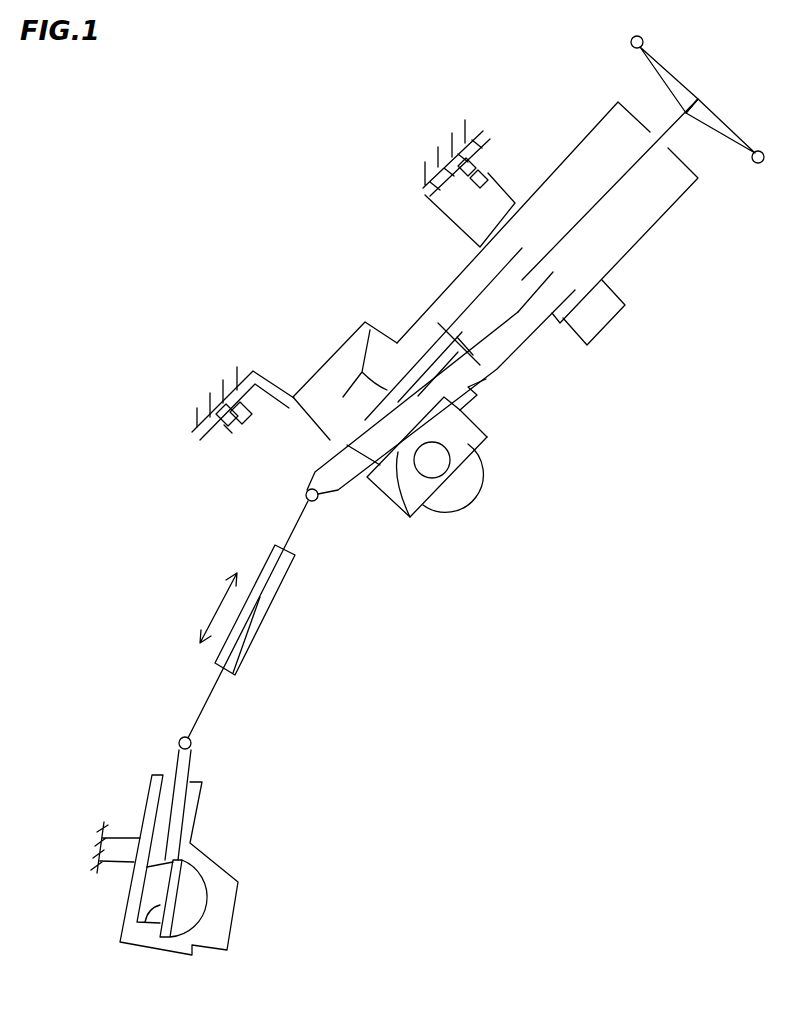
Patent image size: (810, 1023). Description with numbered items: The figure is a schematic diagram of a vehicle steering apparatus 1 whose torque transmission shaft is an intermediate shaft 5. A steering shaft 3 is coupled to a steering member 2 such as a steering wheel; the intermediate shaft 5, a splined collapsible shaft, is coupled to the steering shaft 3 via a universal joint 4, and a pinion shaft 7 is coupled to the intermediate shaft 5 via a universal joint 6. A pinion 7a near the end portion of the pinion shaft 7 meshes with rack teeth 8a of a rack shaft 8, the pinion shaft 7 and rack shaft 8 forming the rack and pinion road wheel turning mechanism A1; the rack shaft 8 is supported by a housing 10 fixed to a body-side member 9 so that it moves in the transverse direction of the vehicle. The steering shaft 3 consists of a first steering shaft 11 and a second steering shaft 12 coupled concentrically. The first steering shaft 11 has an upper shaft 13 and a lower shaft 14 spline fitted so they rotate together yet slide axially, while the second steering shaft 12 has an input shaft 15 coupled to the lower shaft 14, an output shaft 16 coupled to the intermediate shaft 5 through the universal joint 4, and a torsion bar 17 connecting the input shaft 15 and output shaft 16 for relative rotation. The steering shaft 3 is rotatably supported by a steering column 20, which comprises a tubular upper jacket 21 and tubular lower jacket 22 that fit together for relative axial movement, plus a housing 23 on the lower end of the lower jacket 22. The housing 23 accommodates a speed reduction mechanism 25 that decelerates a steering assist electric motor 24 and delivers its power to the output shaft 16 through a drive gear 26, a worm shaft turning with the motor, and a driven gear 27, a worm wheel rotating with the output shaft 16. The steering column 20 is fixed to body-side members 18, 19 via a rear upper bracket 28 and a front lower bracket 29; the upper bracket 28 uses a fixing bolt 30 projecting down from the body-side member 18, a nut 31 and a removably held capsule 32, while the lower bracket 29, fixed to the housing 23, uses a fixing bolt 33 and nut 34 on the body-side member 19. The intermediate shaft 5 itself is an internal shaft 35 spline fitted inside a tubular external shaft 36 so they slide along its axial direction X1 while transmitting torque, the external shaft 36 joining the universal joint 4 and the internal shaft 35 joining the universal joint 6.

The vehicle steering apparatus 1 is at (703, 75).
The steering member 2 is at (723, 116).
The steering shaft 3 is at (670, 127).
The universal joint 4 is at (306, 497).
The intermediate shaft 5 is at (267, 613).
The universal joint 6 is at (178, 742).
The pinion shaft 7 is at (185, 762).
The pinion 7a is at (147, 893).
The rack shaft 8 is at (218, 897).
The rack teeth 8a is at (160, 907).
The body-side member 9 is at (92, 840).
The housing 10 is at (147, 795).
The first steering shaft 11 is at (613, 187).
The second steering shaft 12 is at (323, 368).
The upper shaft 13 is at (603, 198).
The lower shaft 14 is at (462, 312).
The input shaft 15 is at (475, 405).
The output shaft 16 is at (343, 497).
The torsion bar 17 is at (352, 428).
The body-side member 18 is at (425, 162).
The body-side member 19 is at (200, 408).
The steering column 20 is at (675, 207).
The upper jacket 21 is at (567, 342).
The lower jacket 22 is at (515, 353).
The housing 23 is at (340, 345).
The electric motor 24 is at (482, 493).
The speed reduction mechanism 25 is at (457, 457).
The drive gear 26 is at (440, 468).
The driven gear 27 is at (410, 512).
The upper bracket 28 is at (445, 215).
The lower bracket 29 is at (255, 372).
The fixing bolt 30 is at (490, 183).
The nut 31 is at (490, 165).
The capsule 32 is at (473, 150).
The fixing bolt 33 is at (250, 430).
The nut 34 is at (224, 436).
The internal shaft 35 is at (210, 700).
The external shaft 36 is at (252, 647).
The axial direction X1 is at (218, 605).
The road wheel turning mechanism A1 is at (203, 938).